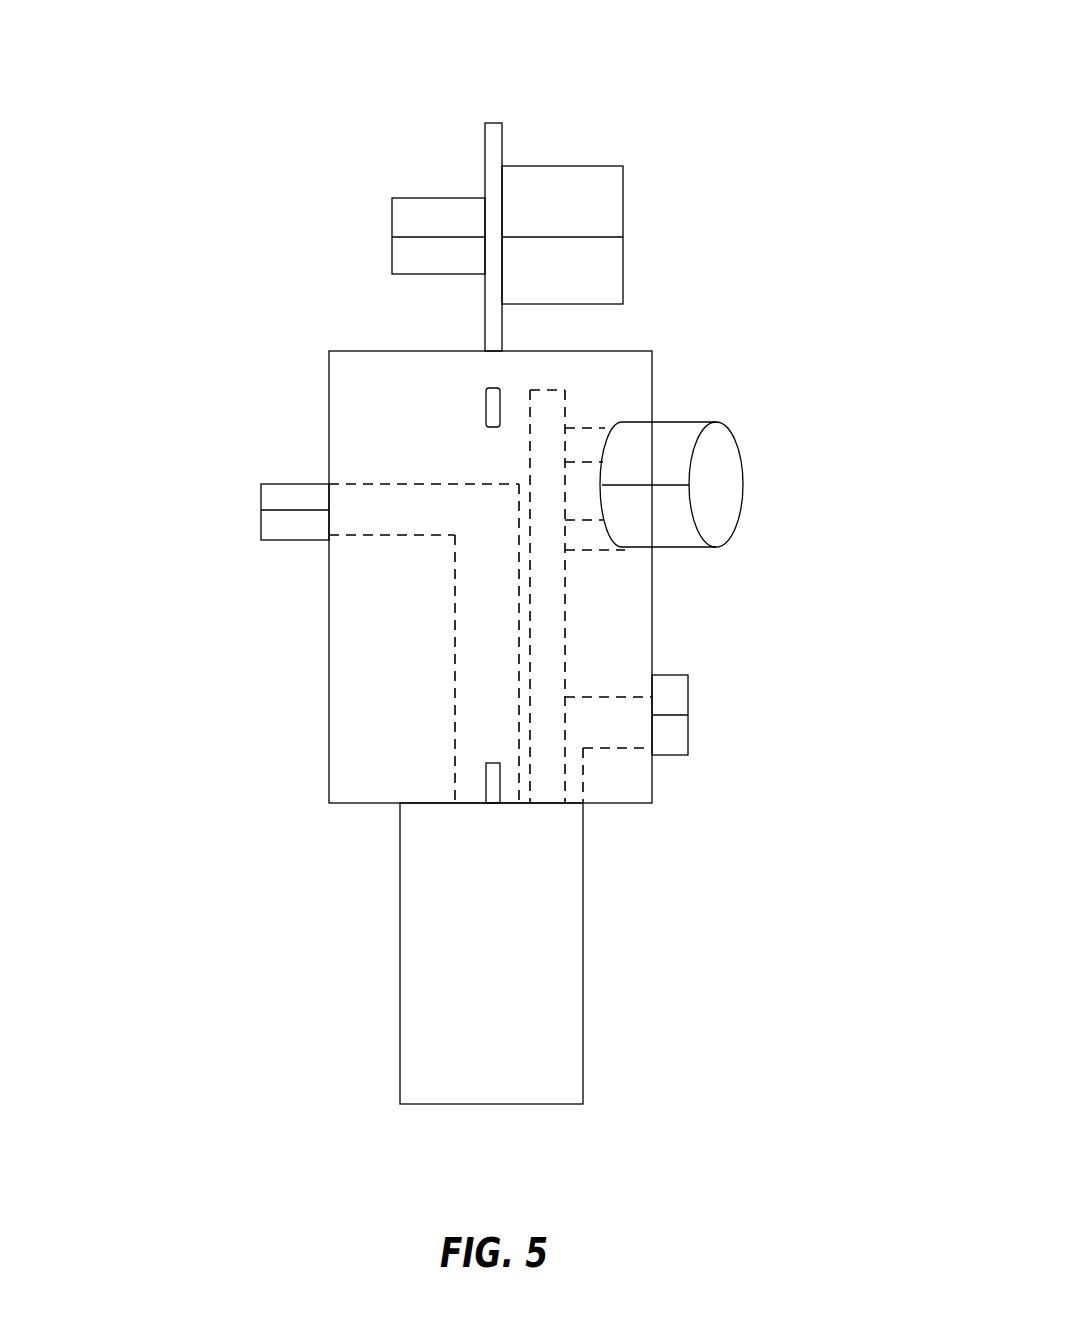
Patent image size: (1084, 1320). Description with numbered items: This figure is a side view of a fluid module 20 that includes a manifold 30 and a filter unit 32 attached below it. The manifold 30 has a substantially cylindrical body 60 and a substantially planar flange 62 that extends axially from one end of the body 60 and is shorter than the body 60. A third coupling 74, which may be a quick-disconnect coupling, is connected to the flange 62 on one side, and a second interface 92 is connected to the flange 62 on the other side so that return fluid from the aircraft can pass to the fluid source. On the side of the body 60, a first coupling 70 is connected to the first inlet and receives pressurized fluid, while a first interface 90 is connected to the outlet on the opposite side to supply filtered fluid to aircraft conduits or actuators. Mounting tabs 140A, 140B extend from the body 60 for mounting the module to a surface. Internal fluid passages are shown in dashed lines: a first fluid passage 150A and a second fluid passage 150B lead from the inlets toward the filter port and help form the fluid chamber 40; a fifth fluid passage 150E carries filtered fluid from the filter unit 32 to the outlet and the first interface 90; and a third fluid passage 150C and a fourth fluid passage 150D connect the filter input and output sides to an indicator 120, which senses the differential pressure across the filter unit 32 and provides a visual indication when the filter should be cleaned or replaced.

The fluid module 20 is at (177, 93).
The manifold 30 is at (255, 667).
The filter unit 32 is at (399, 985).
The fluid chamber 40 is at (566, 631).
The body 60 is at (328, 438).
The flange 62 is at (485, 150).
The first coupling 70 is at (746, 485).
The third coupling 74 is at (625, 194).
The first interface 90 is at (260, 510).
The second interface 92 is at (391, 247).
The indicator 120 is at (690, 715).
The mounting tab 140A is at (484, 407).
The mounting tab 140B is at (484, 783).
The first fluid passage 150A is at (604, 427).
The second fluid passage 150B is at (594, 530).
The third fluid passage 150C is at (626, 748).
The fourth fluid passage 150D is at (617, 775).
The fifth fluid passage 150E is at (454, 635).